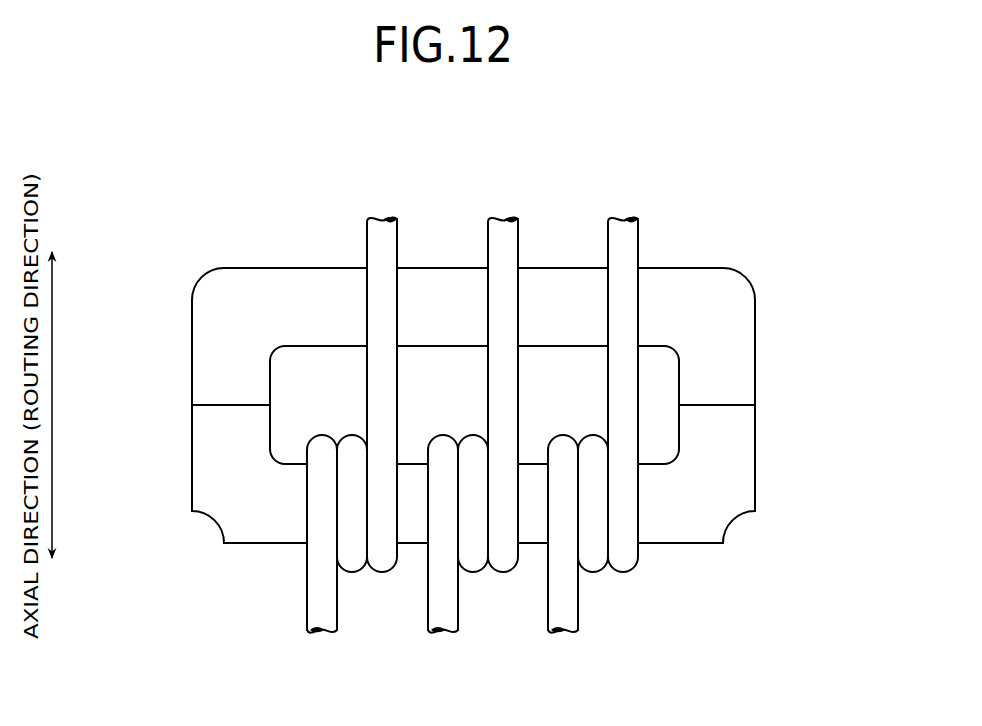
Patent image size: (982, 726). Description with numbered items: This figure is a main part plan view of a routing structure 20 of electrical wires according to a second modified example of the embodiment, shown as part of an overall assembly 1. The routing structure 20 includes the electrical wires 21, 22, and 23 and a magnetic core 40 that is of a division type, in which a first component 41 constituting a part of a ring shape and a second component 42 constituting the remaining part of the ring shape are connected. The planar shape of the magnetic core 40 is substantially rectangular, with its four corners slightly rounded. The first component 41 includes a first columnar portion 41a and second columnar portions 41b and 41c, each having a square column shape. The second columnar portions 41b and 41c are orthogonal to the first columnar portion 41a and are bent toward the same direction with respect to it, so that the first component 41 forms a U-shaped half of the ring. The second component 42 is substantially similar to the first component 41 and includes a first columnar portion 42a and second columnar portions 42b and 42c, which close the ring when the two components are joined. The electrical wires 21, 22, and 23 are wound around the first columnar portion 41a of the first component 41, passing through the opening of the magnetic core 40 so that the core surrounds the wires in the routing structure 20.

The coil device 1 is at (150, 141).
The routing structure 20 is at (270, 196).
The electrical wire 21 is at (622, 209).
The electrical wire 22 is at (502, 209).
The electrical wire 23 is at (382, 209).
The magnetic core 40 is at (440, 127).
The first component 41 is at (410, 455).
The first columnar portion 41a is at (533, 518).
The second columnar portion 41b is at (221, 435).
The second columnar portion 41c is at (729, 437).
The second component 42 is at (560, 259).
The first columnar portion 42a is at (319, 288).
The second columnar portion 42b is at (223, 377).
The second columnar portion 42c is at (724, 375).